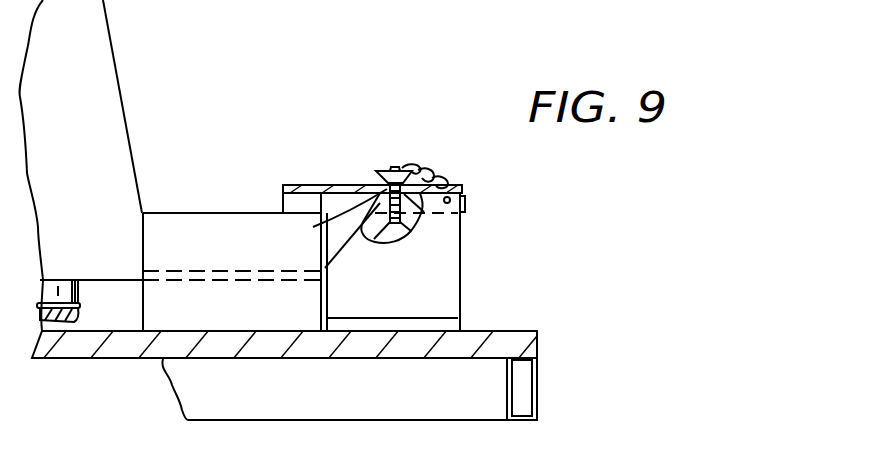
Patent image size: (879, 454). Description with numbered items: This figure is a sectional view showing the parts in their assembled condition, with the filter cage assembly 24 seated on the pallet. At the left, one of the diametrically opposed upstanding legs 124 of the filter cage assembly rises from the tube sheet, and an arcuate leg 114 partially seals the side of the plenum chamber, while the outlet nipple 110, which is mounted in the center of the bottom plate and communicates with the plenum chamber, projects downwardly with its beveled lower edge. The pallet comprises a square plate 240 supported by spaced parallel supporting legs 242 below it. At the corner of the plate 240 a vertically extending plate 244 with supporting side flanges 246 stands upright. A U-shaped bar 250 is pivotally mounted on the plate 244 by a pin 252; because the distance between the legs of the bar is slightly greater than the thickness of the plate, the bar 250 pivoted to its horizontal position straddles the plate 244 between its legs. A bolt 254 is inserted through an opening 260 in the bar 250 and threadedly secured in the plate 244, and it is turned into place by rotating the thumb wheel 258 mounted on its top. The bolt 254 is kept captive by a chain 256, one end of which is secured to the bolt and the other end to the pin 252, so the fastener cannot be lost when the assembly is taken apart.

The filter cage assembly 24 is at (168, 129).
The upstanding leg 124 is at (100, 150).
The arcuate leg 114 is at (222, 249).
The outlet nipple 110 is at (78, 299).
The plate 244 is at (428, 286).
The U-shaped bar 250 is at (323, 186).
The thumb wheel 258 is at (380, 171).
The chain 256 is at (424, 169).
The pin 252 is at (463, 203).
The bolt 254 is at (400, 222).
The opening 260 is at (314, 227).
The supporting side flange 246 is at (455, 327).
The plate 240 is at (537, 332).
The supporting leg 242 is at (538, 400).